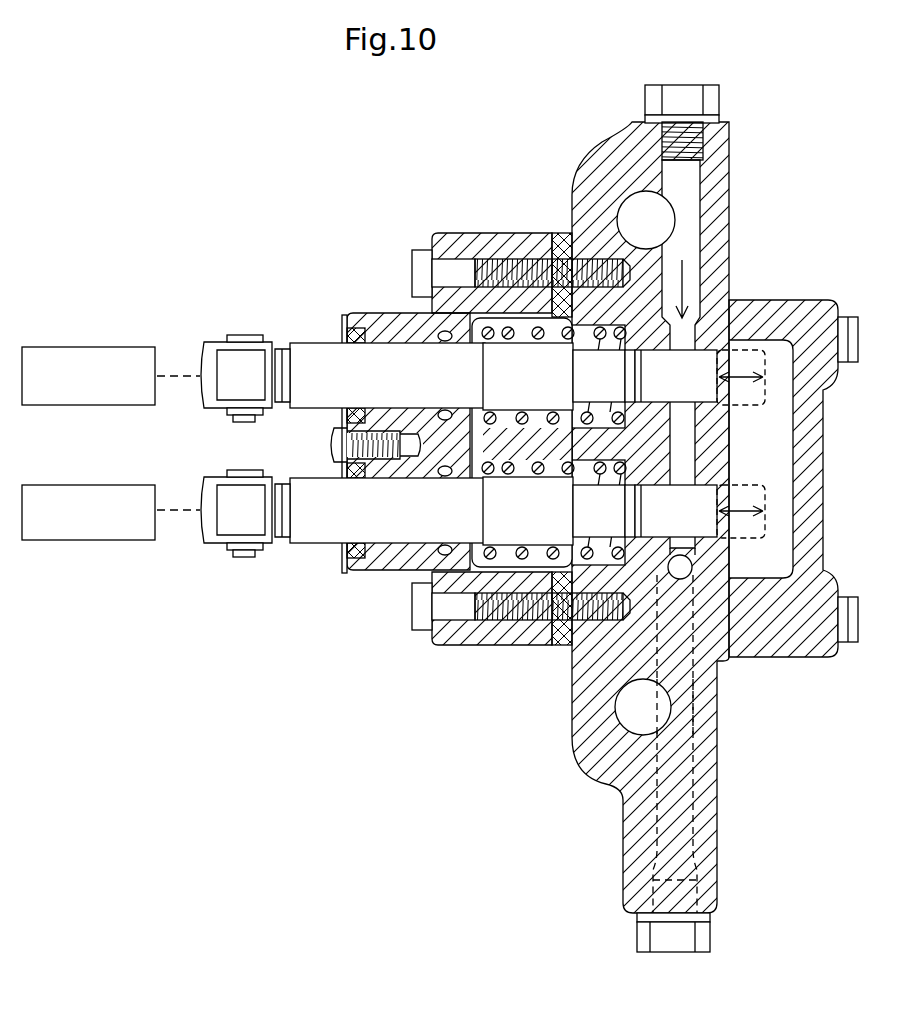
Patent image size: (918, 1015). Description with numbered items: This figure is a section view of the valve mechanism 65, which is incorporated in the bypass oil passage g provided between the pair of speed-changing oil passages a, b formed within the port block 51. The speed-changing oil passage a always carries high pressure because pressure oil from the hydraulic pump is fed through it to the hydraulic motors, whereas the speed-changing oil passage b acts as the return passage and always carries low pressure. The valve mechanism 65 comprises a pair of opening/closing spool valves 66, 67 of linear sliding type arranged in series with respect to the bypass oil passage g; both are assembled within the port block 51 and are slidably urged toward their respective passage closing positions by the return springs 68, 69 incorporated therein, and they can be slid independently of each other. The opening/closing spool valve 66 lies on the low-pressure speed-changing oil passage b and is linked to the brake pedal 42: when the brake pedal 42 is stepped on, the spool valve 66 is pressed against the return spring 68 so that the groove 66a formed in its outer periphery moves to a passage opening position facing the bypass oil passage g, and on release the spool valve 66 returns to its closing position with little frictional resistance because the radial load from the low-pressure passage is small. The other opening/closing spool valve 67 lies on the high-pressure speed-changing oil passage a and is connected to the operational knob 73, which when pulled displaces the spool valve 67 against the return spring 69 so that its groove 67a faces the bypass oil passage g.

The operational knob 73 is at (97, 347).
The brake pedal 42 is at (97, 540).
The valve mechanism 65 is at (477, 236).
The opening/closing spool valve 67 is at (320, 352).
The opening/closing spool valve 66 is at (318, 528).
The return spring 69 is at (508, 340).
The return spring 68 is at (520, 550).
The groove 67a is at (625, 378).
The groove 66a is at (625, 512).
The port block 51 is at (712, 814).
The speed-changing oil passage a is at (660, 222).
The speed-changing oil passage b is at (660, 705).
The bypass oil passage g is at (733, 456).